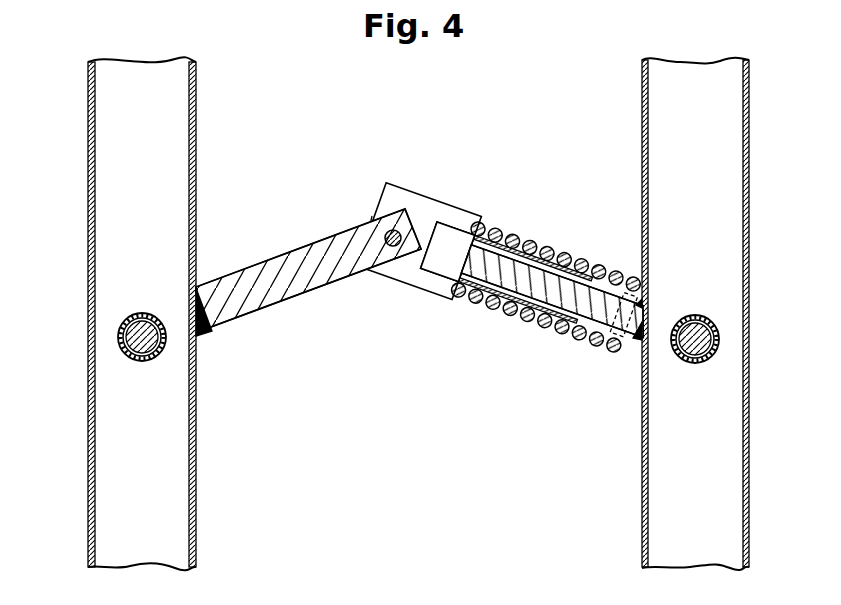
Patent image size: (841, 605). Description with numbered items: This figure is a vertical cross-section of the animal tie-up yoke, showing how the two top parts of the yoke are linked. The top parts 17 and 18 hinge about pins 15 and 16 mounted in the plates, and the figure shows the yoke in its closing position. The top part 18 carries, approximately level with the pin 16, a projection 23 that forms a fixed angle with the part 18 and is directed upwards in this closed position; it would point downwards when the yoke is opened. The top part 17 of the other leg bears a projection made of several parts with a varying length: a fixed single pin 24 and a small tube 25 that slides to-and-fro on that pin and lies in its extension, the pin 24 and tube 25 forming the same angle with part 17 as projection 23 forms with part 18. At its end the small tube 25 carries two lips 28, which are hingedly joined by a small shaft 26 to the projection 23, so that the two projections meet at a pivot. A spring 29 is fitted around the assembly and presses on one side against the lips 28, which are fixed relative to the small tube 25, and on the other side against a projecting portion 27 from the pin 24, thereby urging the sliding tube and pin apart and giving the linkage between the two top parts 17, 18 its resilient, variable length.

The pin 15 is at (683, 353).
The pin 16 is at (150, 347).
The top part of yoke 17 is at (642, 136).
The top part of yoke 18 is at (196, 131).
The projection 23 is at (313, 273).
The fixed single pin 24 is at (590, 338).
The small tube 25 is at (448, 295).
The small shaft 26 is at (388, 232).
The projecting portion 27 is at (622, 350).
The lips 28 is at (421, 200).
The spring 29 is at (490, 308).